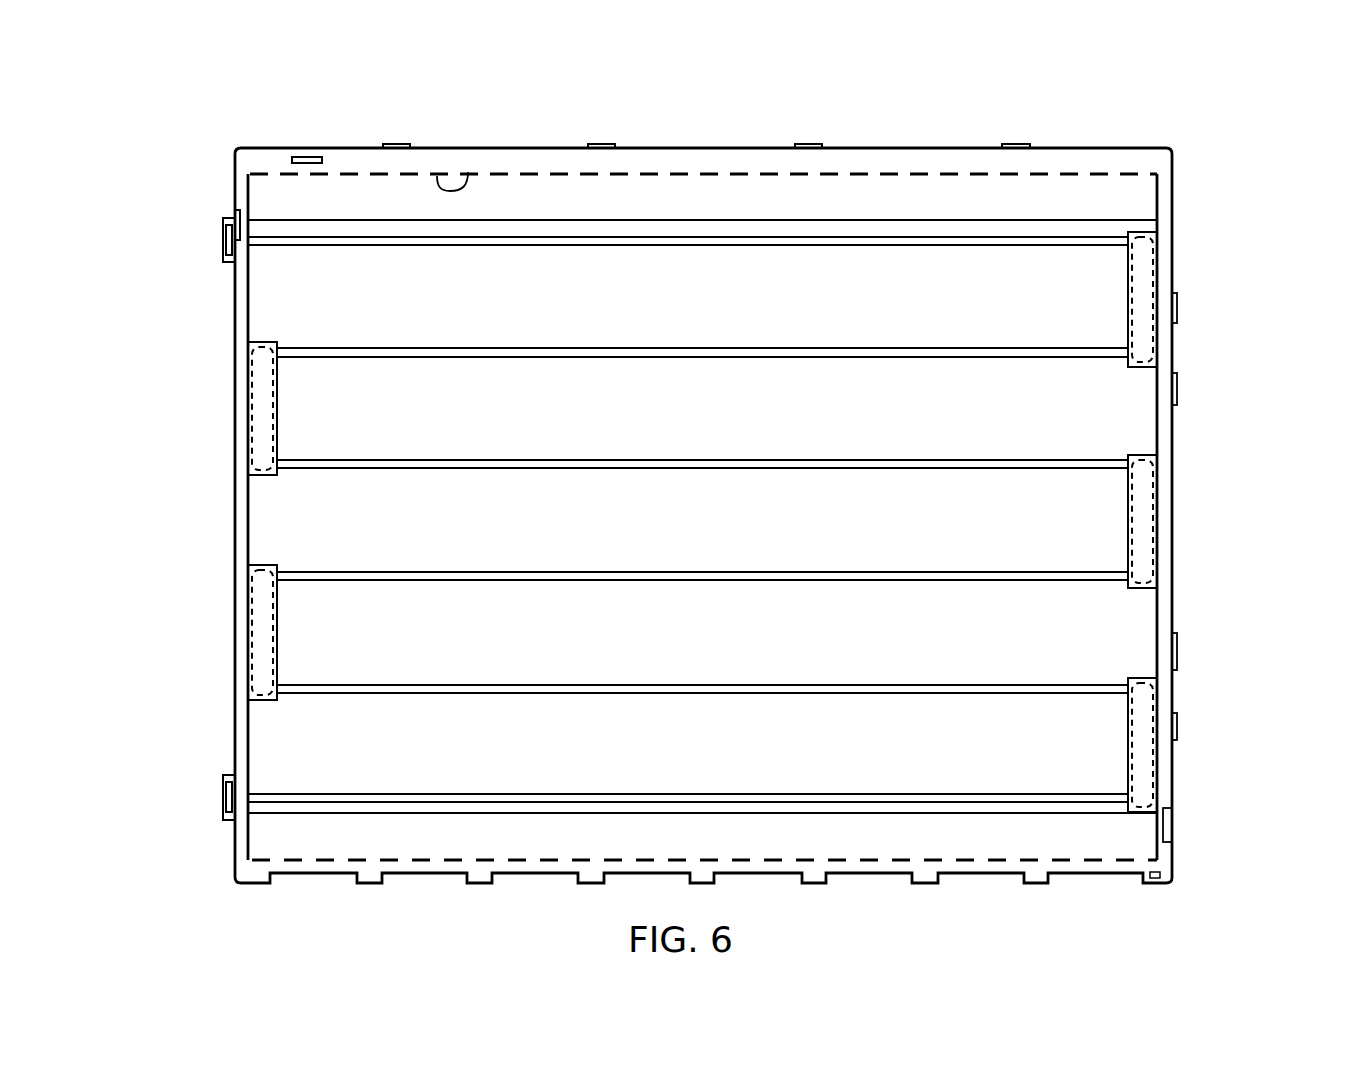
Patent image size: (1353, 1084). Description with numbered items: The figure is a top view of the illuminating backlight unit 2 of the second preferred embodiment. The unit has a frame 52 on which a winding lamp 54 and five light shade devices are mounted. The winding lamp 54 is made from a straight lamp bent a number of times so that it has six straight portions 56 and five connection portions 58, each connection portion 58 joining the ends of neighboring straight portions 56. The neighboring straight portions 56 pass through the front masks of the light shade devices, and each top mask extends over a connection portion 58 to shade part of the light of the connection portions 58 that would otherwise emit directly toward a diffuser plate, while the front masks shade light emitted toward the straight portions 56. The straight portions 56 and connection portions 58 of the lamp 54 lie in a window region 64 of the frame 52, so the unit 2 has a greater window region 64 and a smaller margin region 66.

The illuminating backlight unit 2 is at (1112, 94).
The frame 52 is at (1174, 265).
The winding lamp 54 is at (565, 228).
The straight portions 56 is at (707, 247).
The connection portions 58 is at (252, 393).
The window region 64 is at (468, 172).
The margin region 66 is at (366, 158).